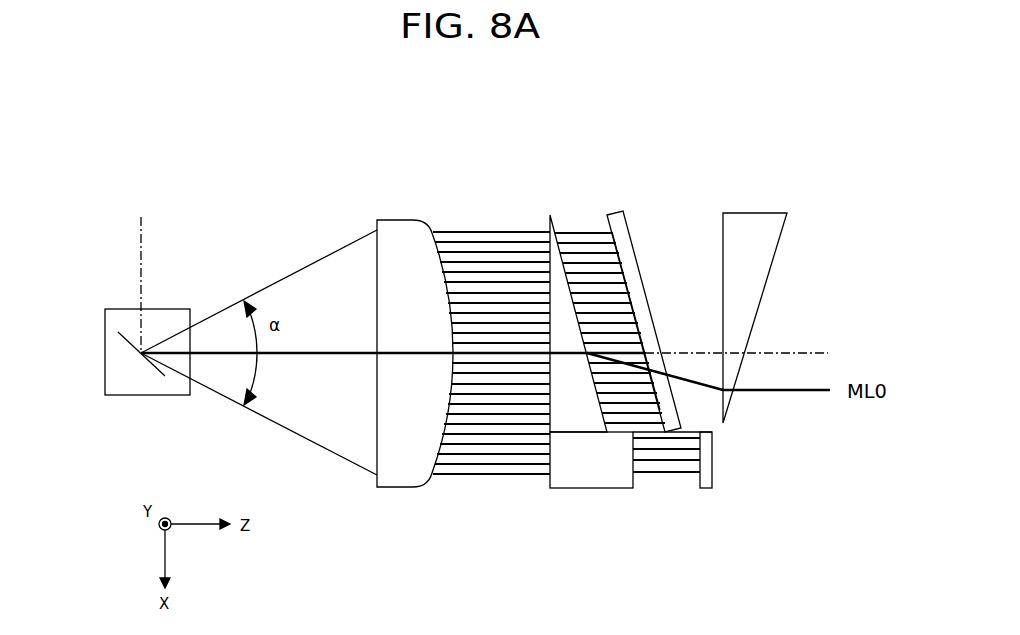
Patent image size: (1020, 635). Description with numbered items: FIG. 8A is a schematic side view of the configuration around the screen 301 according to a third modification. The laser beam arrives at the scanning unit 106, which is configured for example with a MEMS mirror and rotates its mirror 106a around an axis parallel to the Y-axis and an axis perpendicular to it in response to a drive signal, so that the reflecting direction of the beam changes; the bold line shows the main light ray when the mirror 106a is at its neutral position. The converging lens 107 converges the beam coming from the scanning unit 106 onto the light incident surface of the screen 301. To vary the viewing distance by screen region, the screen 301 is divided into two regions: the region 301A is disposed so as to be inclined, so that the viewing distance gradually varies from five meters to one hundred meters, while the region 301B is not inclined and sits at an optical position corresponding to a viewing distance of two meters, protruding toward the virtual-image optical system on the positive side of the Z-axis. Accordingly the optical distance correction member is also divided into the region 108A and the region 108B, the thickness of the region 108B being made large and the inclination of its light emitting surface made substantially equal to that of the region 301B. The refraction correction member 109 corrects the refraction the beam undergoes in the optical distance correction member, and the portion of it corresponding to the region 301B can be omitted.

The scanning unit 106 is at (125, 310).
The mirror 106a is at (123, 347).
The converging lens 107 is at (403, 217).
The region 108A of optical distance correction member 108A is at (550, 215).
The region 108B of optical distance correction member 108B is at (580, 489).
The screen 301 is at (618, 212).
The region 301A of screen 301A is at (634, 256).
The region 301B of screen 301B is at (710, 468).
The refraction correction member 109 is at (737, 220).